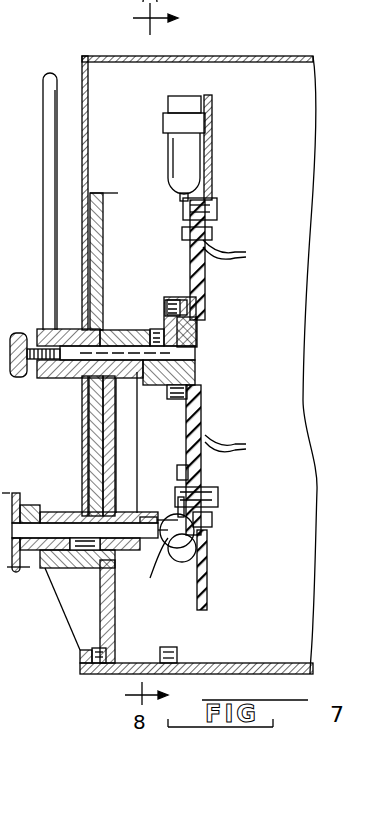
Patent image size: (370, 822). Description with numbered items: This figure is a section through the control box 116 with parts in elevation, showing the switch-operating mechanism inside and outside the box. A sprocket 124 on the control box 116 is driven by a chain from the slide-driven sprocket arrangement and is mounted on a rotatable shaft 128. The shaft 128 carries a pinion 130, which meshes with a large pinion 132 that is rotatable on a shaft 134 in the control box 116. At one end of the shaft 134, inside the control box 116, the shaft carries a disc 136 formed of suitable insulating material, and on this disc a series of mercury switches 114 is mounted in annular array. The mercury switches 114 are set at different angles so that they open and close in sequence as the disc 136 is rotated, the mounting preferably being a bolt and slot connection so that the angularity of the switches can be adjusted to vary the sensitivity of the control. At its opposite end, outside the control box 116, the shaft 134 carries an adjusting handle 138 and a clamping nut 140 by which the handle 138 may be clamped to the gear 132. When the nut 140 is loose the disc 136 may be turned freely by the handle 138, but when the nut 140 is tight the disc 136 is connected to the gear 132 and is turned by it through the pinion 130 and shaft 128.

The mercury switches 114 is at (182, 163).
The control box 116 is at (262, 74).
The sprocket 124 is at (22, 496).
The rotatable shaft 128 is at (150, 573).
The pinion 130 is at (105, 512).
The large pinion 132 is at (103, 270).
The shaft 134 is at (187, 350).
The disc 136 is at (205, 283).
The adjusting handle 138 is at (45, 197).
The clamping nut 140 is at (16, 378).